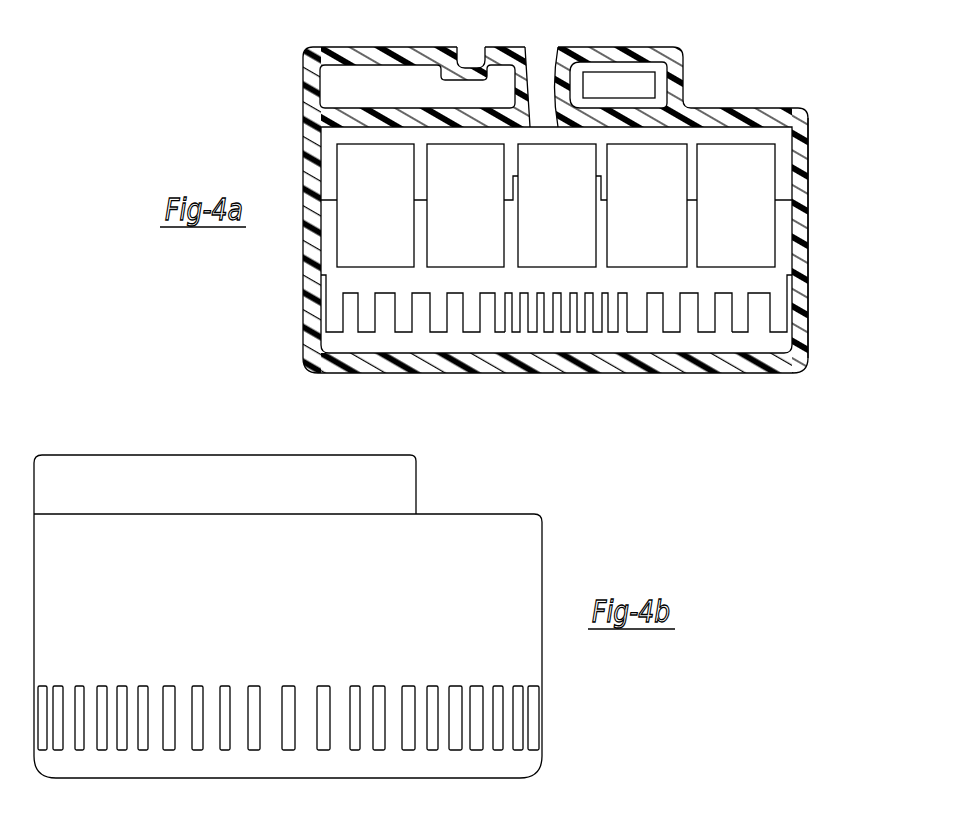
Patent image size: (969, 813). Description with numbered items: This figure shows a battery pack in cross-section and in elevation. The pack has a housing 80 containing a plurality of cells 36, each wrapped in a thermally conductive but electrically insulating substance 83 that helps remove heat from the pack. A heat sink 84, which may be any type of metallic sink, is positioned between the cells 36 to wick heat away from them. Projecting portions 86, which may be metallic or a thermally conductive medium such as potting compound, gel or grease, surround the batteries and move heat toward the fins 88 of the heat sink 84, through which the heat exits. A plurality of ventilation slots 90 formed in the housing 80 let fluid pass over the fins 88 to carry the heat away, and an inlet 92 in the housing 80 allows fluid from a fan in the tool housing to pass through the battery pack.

In FIG. 4A, the cells 36 is at (658, 228).
In FIG. 4B, the housing 80 is at (530, 585).
In FIG. 4A, the thermally conductive but electrically insulating substance 83 is at (728, 157).
In FIG. 4A, the heat sink 84 is at (752, 278).
In FIG. 4A, the projecting portions 86 is at (783, 230).
In FIG. 4A, the fins 88 is at (738, 322).
In FIG. 4A, the slots 90 is at (503, 372).
In FIG. 4B, the slots 90 is at (535, 705).
In FIG. 4A, the inlet 92 is at (557, 68).